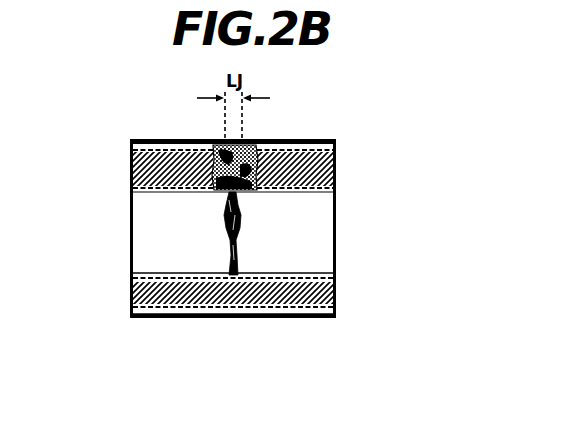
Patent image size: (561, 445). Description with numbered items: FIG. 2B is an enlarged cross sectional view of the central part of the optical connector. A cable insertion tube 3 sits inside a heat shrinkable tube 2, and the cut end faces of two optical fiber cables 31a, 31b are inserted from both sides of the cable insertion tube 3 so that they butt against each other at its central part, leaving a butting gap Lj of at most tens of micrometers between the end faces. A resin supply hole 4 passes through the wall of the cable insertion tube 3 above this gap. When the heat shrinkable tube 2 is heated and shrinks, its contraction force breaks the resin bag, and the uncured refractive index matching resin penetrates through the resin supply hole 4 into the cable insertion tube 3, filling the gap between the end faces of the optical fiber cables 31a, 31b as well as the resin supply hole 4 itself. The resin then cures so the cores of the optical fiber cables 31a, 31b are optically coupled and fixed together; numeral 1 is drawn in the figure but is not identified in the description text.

The crack 1 is at (213, 140).
The heat shrinkable tube 2 is at (314, 140).
The cable insertion tube 3 is at (130, 162).
The resin supply hole 4 is at (258, 140).
The optical fiber cable 31a is at (137, 242).
The optical fiber cable 31b is at (328, 242).